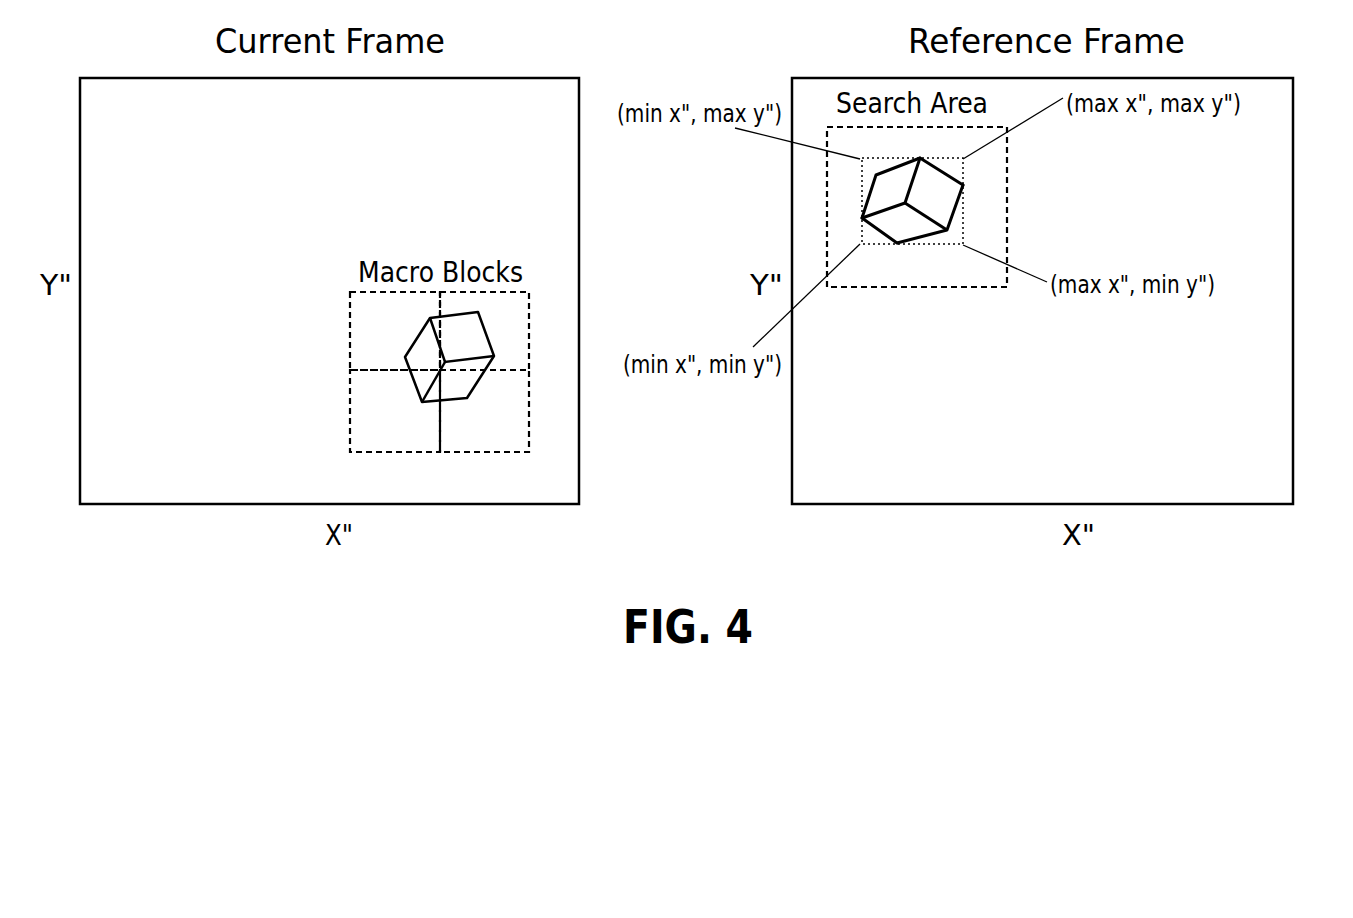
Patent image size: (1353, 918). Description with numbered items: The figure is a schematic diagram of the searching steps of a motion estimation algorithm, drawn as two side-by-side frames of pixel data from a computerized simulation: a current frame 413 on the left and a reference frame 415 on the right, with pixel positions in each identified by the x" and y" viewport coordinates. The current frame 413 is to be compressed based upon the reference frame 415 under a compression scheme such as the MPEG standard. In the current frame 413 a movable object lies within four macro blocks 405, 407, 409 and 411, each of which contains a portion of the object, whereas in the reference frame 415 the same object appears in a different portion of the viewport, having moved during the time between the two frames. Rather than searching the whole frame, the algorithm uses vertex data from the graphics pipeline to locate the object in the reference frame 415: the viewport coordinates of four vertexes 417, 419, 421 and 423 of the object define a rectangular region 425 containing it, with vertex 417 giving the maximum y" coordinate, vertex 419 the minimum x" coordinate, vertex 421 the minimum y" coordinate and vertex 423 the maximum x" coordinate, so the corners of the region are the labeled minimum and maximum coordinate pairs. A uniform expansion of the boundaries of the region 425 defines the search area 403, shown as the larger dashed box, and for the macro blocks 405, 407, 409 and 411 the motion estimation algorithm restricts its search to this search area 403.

The search area 403 is at (1007, 177).
The macro block 405 is at (350, 327).
The macro block 407 is at (350, 393).
The macro block 409 is at (530, 345).
The macro block 411 is at (530, 402).
The current frame 413 is at (80, 347).
The reference frame 415 is at (1293, 290).
The vertex 417 is at (920, 158).
The vertex 419 is at (862, 218).
The vertex 421 is at (898, 244).
The vertex 423 is at (963, 187).
The rectangular region 425 is at (965, 222).